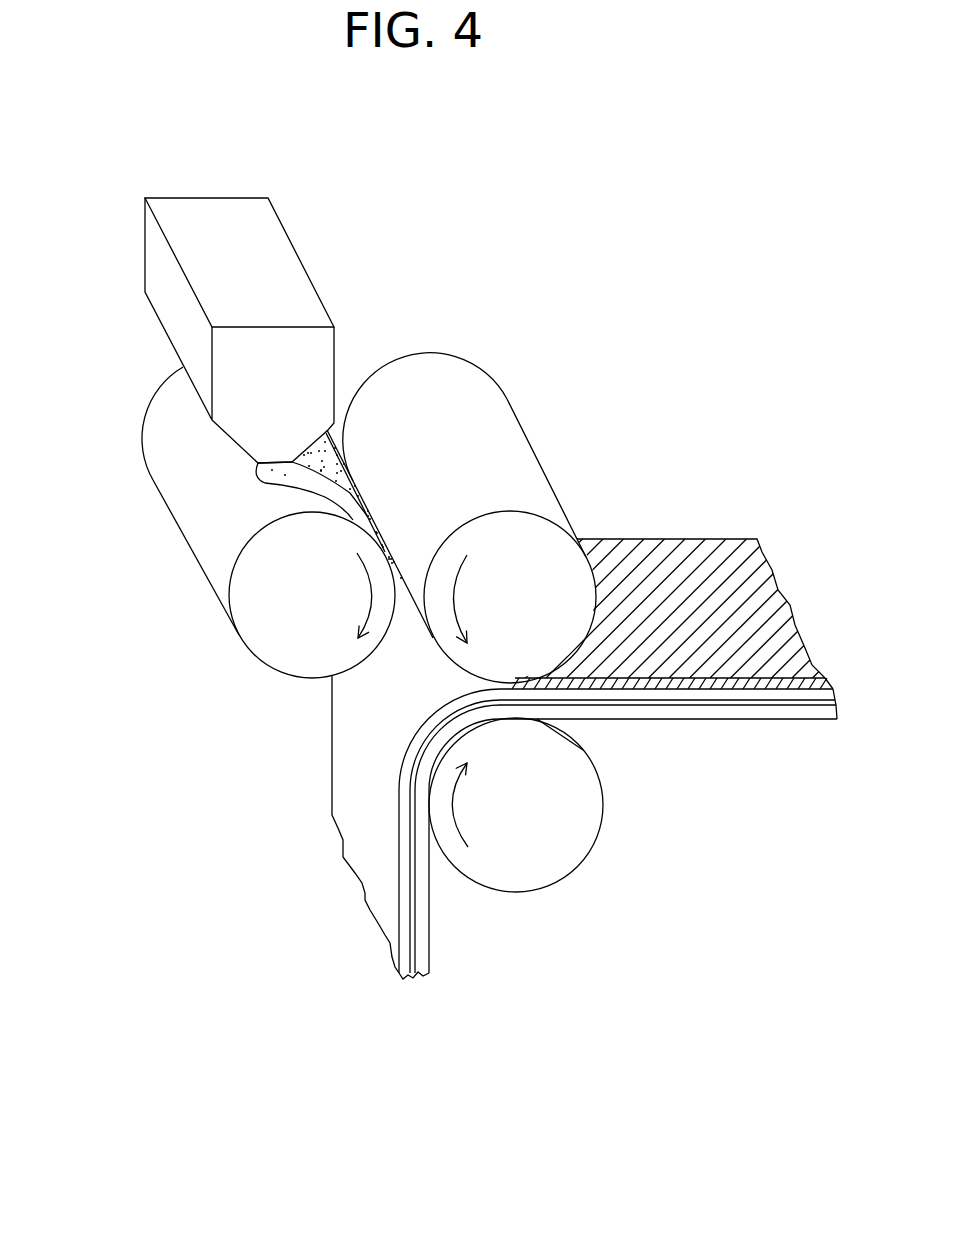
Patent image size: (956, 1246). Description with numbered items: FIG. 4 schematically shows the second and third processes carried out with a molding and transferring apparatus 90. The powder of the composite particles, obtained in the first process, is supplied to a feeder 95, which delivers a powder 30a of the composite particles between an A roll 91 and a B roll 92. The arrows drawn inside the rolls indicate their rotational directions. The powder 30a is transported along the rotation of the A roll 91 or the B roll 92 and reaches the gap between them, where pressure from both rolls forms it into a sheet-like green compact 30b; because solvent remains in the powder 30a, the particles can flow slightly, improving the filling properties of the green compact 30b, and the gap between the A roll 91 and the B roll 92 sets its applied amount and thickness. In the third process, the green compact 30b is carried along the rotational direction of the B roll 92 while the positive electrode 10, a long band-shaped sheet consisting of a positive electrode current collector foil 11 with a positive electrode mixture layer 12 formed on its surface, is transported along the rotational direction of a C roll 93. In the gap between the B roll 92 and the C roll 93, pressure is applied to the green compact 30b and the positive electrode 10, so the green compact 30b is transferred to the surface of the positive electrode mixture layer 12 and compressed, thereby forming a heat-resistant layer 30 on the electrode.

The molding and transferring apparatus 90 is at (528, 194).
The feeder 95 is at (217, 209).
The A roll 91 is at (157, 403).
The B roll 92 is at (463, 374).
The C roll 93 is at (579, 842).
The heat-resistant layer 30 is at (701, 552).
The powder of the composite particles 30a is at (255, 467).
The sheet-like green compact 30b is at (405, 652).
The positive electrode 10 is at (591, 885).
The positive electrode current collector foil 11 is at (483, 1032).
The positive electrode mixture layer 12 is at (383, 898).